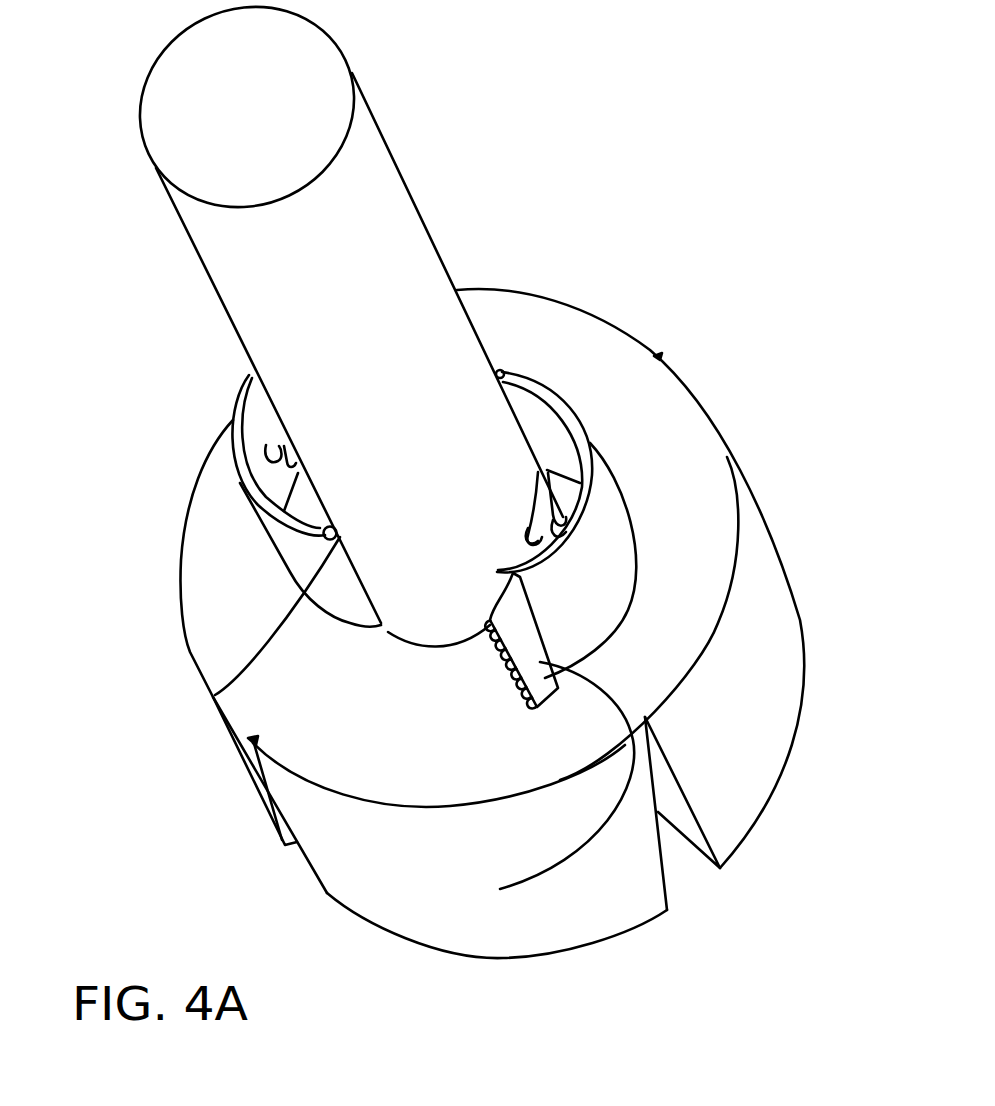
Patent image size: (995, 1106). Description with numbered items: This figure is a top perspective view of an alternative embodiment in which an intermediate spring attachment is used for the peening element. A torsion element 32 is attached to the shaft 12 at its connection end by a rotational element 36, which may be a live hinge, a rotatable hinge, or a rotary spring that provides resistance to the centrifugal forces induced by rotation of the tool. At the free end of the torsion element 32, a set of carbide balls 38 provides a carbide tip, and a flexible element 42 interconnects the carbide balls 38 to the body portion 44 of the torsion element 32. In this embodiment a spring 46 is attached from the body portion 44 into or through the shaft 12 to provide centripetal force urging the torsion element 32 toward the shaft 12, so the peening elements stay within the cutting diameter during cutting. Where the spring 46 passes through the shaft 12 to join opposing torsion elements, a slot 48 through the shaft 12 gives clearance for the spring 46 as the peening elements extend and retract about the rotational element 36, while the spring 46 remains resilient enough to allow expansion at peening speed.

The shaft 12 is at (378, 245).
The torsion element 32 is at (262, 530).
The rotational element 36 is at (215, 695).
The carbide balls 38 is at (506, 660).
The flexible element 42 is at (500, 889).
The body portion 44 is at (243, 483).
The spring 46 is at (281, 446).
The slot 48 is at (521, 545).